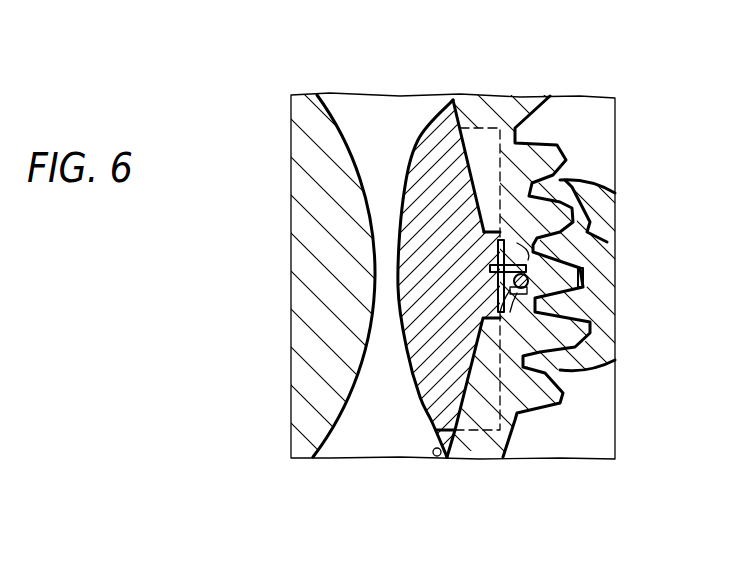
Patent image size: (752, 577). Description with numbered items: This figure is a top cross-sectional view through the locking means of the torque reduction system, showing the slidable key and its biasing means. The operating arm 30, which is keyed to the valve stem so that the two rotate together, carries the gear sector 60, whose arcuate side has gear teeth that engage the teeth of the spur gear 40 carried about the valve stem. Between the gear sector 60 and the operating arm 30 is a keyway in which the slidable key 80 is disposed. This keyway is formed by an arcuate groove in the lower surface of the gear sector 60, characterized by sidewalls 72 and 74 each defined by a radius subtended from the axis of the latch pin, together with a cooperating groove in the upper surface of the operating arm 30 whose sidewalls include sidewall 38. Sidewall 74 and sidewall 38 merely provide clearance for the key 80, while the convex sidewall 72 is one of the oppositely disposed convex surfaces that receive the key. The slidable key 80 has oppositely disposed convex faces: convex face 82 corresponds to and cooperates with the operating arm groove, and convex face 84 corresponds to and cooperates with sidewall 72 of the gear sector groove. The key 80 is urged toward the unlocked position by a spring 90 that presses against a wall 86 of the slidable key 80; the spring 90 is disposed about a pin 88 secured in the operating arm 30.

The operating arm 30 is at (380, 107).
The sidewall 38 is at (560, 333).
The spur gear 40 is at (603, 238).
The gear sector 60 is at (497, 128).
The sidewall 72 is at (440, 455).
The sidewall 74 is at (338, 412).
The slidable key 80 is at (422, 130).
The convex face 82 is at (412, 405).
The convex face 84 is at (467, 166).
The wall 86 is at (490, 270).
The pin 88 is at (583, 276).
The spring 90 is at (498, 244).